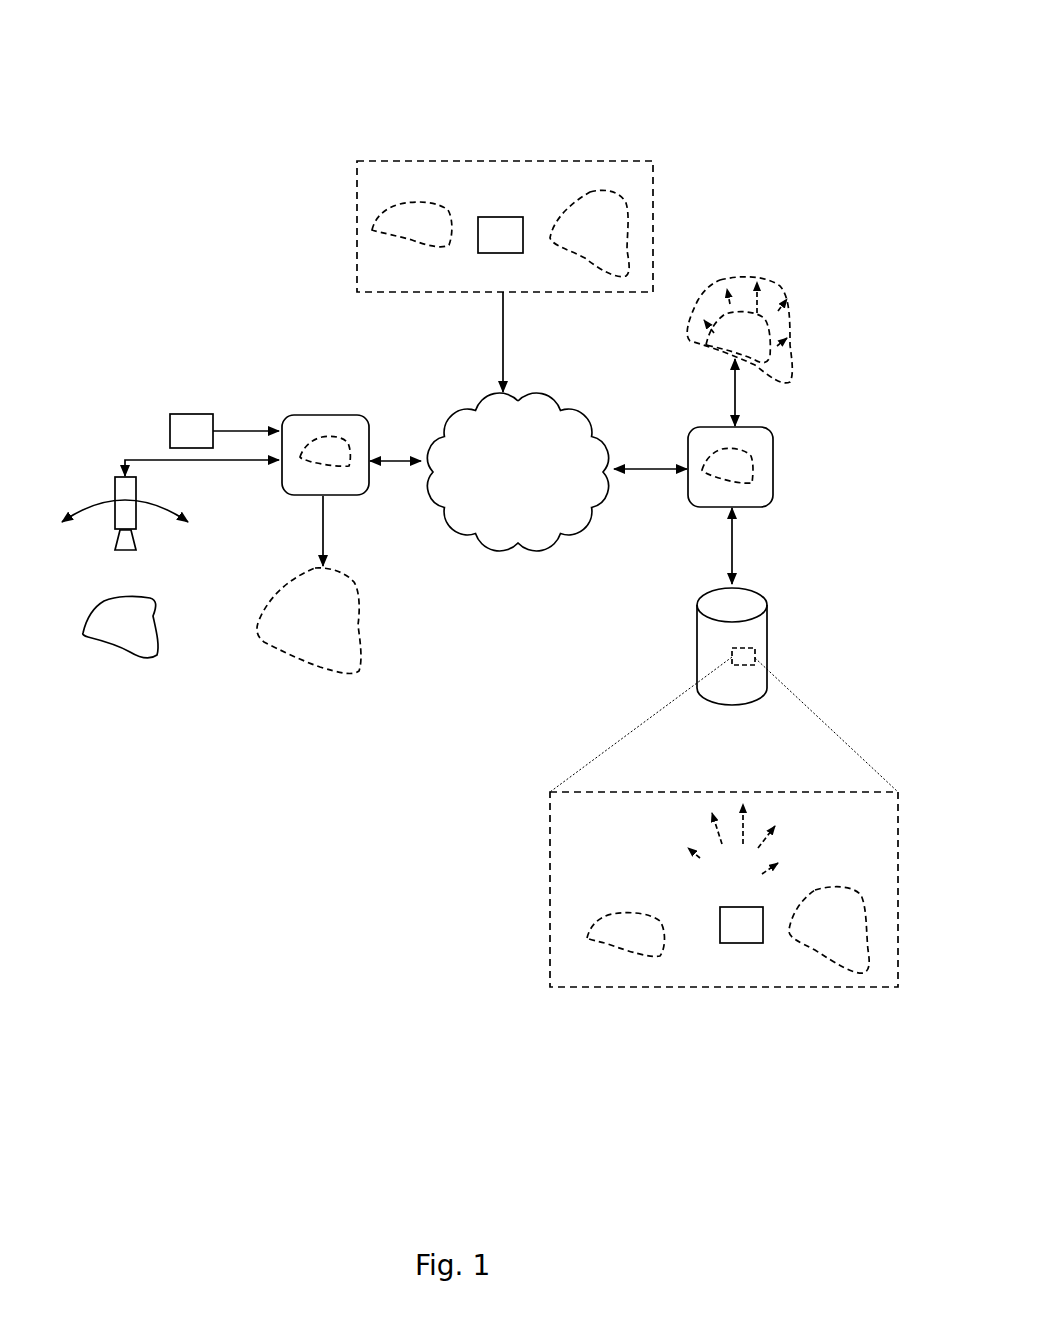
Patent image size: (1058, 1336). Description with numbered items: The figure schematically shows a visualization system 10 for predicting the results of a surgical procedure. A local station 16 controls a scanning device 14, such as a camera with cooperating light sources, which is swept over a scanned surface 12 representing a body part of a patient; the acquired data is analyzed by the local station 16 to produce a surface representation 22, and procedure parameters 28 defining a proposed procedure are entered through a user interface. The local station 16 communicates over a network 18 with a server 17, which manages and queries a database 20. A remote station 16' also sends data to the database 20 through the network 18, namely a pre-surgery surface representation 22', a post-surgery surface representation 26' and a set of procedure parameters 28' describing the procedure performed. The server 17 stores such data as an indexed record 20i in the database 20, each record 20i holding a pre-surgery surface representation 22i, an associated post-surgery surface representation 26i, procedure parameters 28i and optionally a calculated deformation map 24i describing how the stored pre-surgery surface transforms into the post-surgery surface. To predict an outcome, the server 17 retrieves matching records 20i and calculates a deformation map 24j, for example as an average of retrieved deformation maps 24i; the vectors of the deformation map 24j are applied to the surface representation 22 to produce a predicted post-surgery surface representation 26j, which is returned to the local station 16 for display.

The visualization system 10 is at (715, 39).
The scanned surface 12 is at (160, 622).
The scanning device 14 is at (118, 477).
The local station 16 is at (354, 465).
The remote station 16' is at (546, 262).
The server 17 is at (773, 445).
The network 18 is at (548, 542).
The database 20 is at (737, 588).
The record 20i is at (747, 792).
The surface representation 22 is at (556, 398).
The pre-surgery surface representation 22' is at (371, 216).
The pre-surgery surface representation 22i is at (632, 948).
The deformation map 24i is at (698, 833).
The deformation map 24j is at (767, 293).
The post-surgery surface representation 26' is at (640, 233).
The post-surgery surface representation 26i is at (822, 947).
The predicted post-surgery surface representation 26j is at (362, 618).
The procedure parameters 28 is at (196, 396).
The procedure parameters 28' is at (460, 187).
The procedure parameters 28i is at (730, 943).